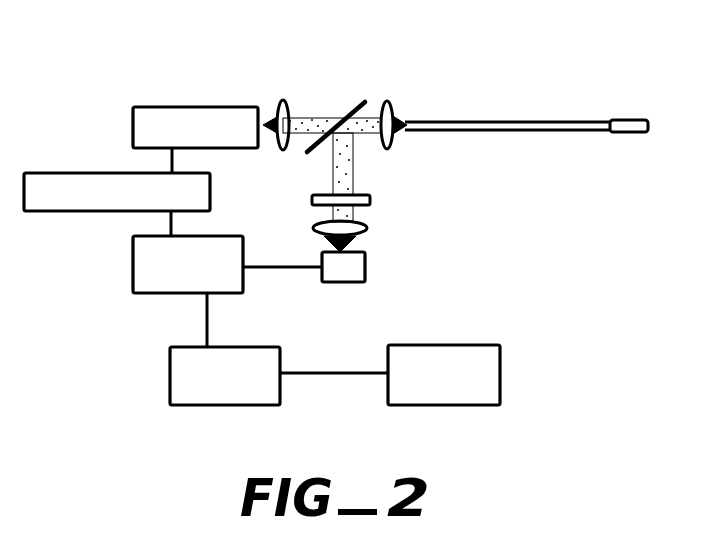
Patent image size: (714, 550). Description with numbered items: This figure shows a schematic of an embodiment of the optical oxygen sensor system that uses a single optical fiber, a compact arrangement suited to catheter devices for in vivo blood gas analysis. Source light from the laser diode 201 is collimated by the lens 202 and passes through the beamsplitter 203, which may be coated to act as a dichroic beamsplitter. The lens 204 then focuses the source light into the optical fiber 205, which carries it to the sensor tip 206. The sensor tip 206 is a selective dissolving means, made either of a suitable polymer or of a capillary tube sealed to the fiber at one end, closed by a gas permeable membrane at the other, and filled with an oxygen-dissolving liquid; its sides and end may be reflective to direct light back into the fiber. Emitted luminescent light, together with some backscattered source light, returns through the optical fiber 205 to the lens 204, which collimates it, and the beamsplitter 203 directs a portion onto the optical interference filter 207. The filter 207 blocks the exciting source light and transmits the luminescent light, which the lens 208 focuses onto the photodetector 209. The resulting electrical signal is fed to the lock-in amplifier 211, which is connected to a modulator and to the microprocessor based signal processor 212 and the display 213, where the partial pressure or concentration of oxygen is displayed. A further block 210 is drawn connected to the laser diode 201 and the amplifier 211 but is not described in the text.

The laser diode 201 is at (196, 107).
The lens 202 is at (283, 100).
The beamsplitter 203 is at (356, 99).
The lens 204 is at (392, 101).
The optical fiber 205 is at (562, 121).
The sensor tip 206 is at (625, 133).
The optical interference filter 207 is at (372, 200).
The lens 208 is at (367, 226).
The photodetector 209 is at (365, 268).
The laser driver 210 is at (61, 173).
The lock-in amplifier 211 is at (245, 282).
The signal processor 212 is at (170, 378).
The display 213 is at (500, 378).